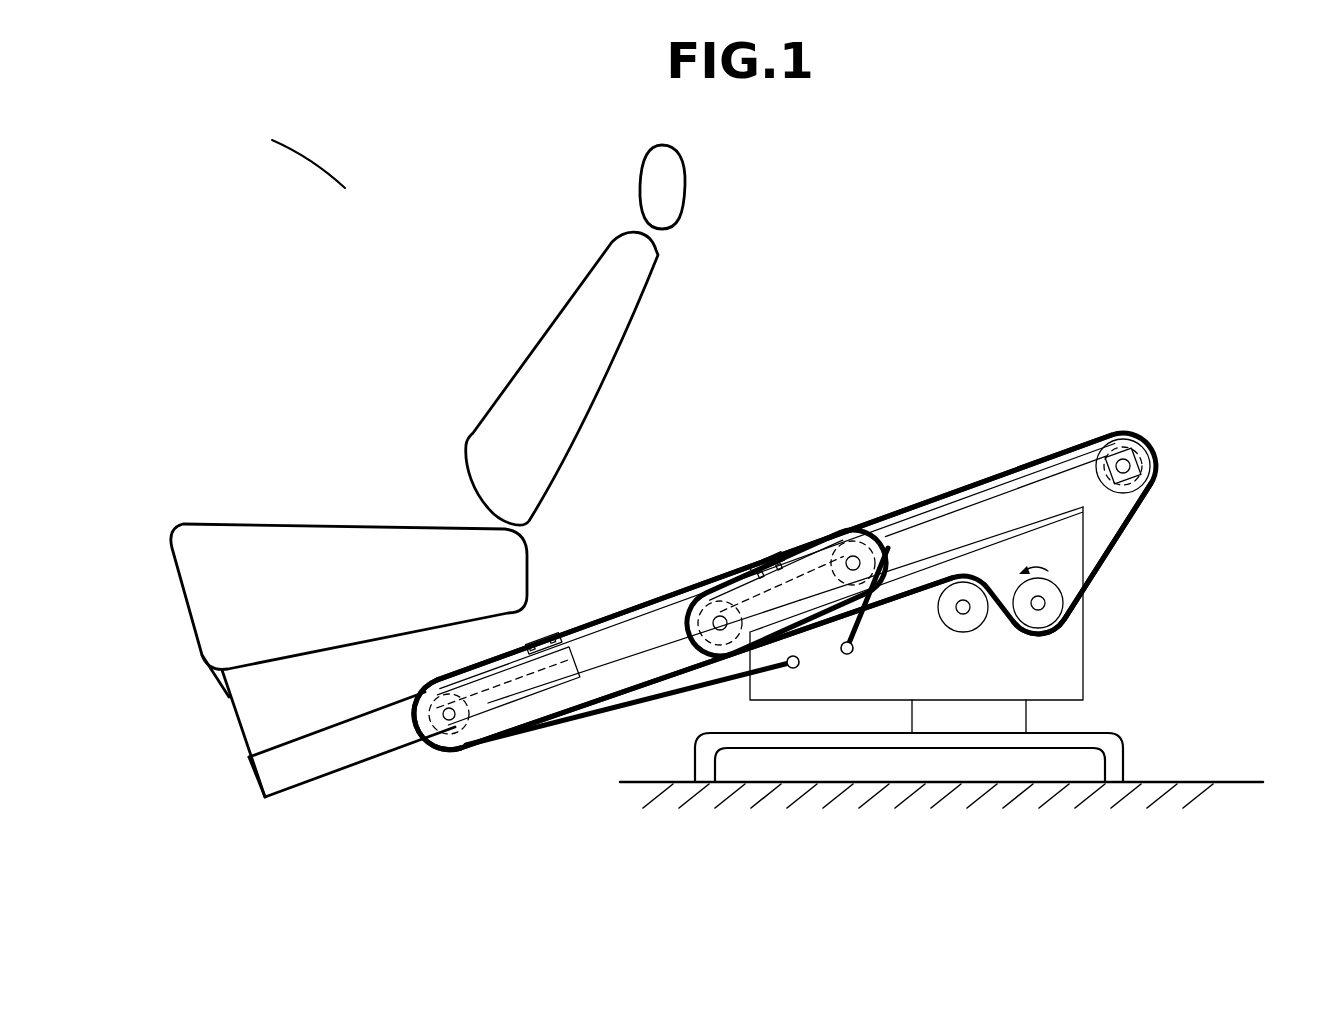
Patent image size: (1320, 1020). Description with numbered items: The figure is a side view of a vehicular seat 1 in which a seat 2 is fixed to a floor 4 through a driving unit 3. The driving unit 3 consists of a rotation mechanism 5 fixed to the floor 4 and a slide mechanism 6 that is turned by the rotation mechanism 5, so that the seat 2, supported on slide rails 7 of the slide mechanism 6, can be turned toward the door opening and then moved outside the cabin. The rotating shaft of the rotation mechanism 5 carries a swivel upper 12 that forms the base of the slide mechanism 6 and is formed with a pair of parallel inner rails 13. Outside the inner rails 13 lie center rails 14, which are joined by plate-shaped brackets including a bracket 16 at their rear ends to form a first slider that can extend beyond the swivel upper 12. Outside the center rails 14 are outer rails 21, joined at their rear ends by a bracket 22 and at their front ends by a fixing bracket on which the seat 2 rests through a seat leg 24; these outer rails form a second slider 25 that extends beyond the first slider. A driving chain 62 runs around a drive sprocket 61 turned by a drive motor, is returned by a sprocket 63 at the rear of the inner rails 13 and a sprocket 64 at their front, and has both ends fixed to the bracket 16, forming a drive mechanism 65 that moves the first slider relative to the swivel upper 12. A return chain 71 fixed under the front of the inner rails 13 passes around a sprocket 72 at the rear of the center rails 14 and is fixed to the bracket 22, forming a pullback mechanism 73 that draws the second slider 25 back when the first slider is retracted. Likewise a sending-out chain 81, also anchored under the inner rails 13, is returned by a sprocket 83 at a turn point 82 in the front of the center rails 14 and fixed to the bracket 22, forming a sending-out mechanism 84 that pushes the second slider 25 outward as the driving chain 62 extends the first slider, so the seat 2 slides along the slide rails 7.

The vehicular seat 1 is at (300, 151).
The seat 2 is at (711, 180).
The driving unit 3 is at (977, 644).
The floor 4 is at (1210, 779).
The rotation mechanism 5 is at (1044, 714).
The slide mechanism 6 is at (1101, 634).
The slide rails 7 is at (1009, 429).
The swivel upper 12 is at (1101, 517).
The inner rail 13 is at (920, 545).
The center rail 14 is at (593, 668).
The bracket 16 is at (795, 563).
The outer rail 21 is at (333, 748).
The bracket 22 is at (540, 633).
The seat leg 24 is at (212, 712).
The second slider 25 is at (256, 817).
The drive sprocket 61 is at (1050, 598).
The driving chain 62 is at (1111, 421).
The sprocket 63 is at (1152, 449).
The sprocket 64 is at (715, 655).
The drive mechanism 65 is at (1159, 540).
The return chain 71 is at (628, 589).
The sprocket 72 is at (872, 545).
The pullback mechanism 73 is at (780, 493).
The sending-out chain 81 is at (493, 760).
The turn point 82 is at (445, 703).
The sprocket 83 is at (440, 742).
The sending-out mechanism 84 is at (542, 762).